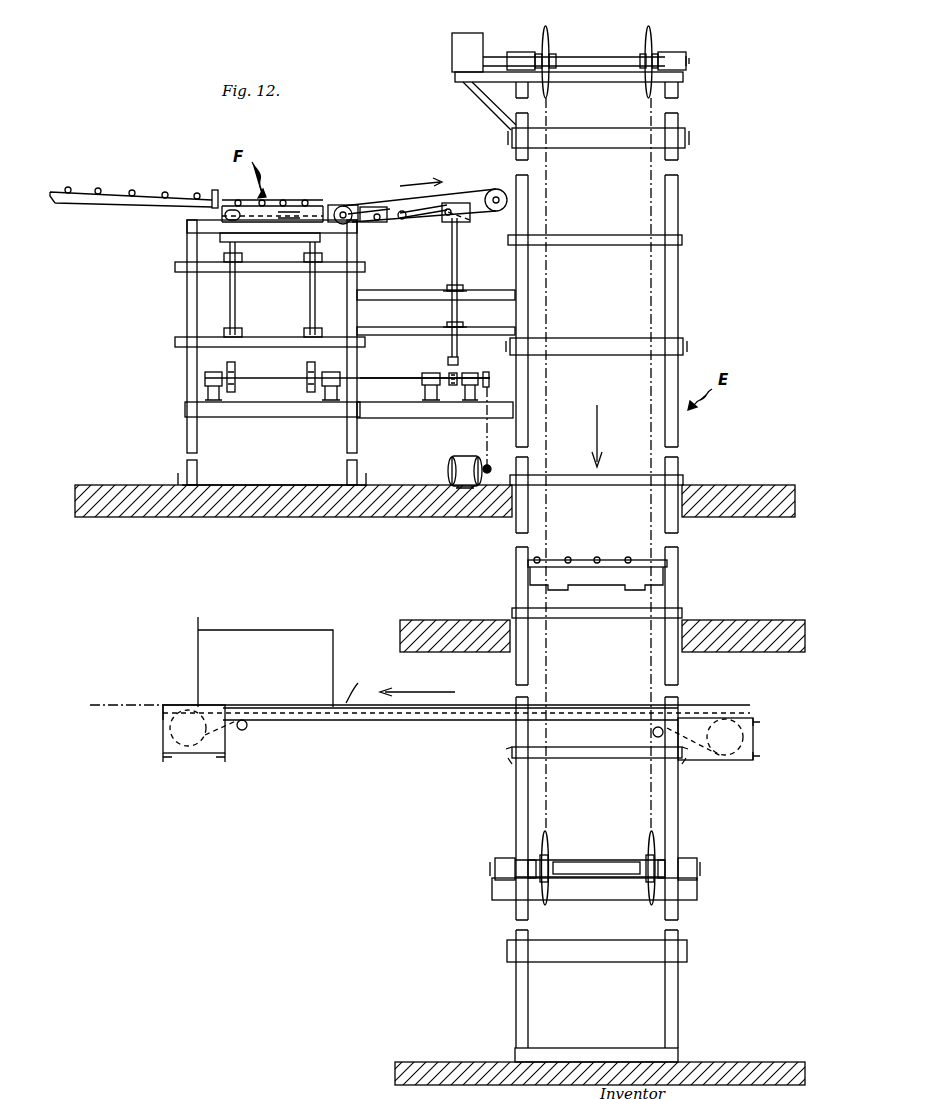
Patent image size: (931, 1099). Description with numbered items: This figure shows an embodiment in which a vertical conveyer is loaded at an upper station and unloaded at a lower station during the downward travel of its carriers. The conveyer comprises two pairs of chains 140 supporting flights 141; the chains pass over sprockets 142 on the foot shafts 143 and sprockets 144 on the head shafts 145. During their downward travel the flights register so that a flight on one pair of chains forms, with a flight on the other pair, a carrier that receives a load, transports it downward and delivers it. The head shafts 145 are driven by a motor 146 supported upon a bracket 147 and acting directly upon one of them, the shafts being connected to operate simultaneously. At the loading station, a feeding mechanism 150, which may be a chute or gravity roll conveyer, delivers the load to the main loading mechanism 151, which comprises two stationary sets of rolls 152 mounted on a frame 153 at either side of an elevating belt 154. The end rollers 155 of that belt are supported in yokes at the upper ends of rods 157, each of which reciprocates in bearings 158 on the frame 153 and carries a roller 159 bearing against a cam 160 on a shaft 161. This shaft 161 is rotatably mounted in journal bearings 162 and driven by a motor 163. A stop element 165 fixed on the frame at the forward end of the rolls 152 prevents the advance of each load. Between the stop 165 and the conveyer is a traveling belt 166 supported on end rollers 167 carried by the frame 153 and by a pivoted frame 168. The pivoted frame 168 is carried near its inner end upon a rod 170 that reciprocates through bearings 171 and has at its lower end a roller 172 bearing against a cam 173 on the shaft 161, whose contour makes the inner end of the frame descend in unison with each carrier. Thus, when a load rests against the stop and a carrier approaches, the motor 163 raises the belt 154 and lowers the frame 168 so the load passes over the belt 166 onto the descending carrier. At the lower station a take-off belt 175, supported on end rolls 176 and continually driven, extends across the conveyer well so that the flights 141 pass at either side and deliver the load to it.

The chains 140 is at (651, 290).
The flights 141 is at (665, 579).
The sprockets 142 is at (646, 835).
The foot shafts 143 is at (617, 848).
The sprockets 144 is at (646, 33).
The head shafts 145 is at (590, 61).
The motor 146 is at (460, 42).
The bracket 147 is at (492, 105).
The feeding mechanism 150 is at (93, 200).
The main loading mechanism 151 is at (226, 197).
The rolls 152 is at (300, 200).
The frame 153 is at (187, 293).
The elevating belt 154 is at (283, 200).
The end rollers 155 is at (228, 206).
The rods 157 is at (312, 298).
The bearings 158 is at (312, 258).
The roller 159 is at (306, 371).
The cam 160 is at (308, 384).
The shaft 161 is at (395, 364).
The journal bearings 162 is at (213, 372).
The motor 163 is at (465, 459).
The stop element 165 is at (408, 186).
The traveling belt 166 is at (455, 190).
The end rollers 167 is at (400, 174).
The pivoted frame 168 is at (404, 218).
The rod 170 is at (452, 267).
The bearings 171 is at (458, 291).
The roller 172 is at (453, 358).
The cam 173 is at (452, 373).
The take-off belt 175 is at (696, 716).
The end rolls 176 is at (165, 735).